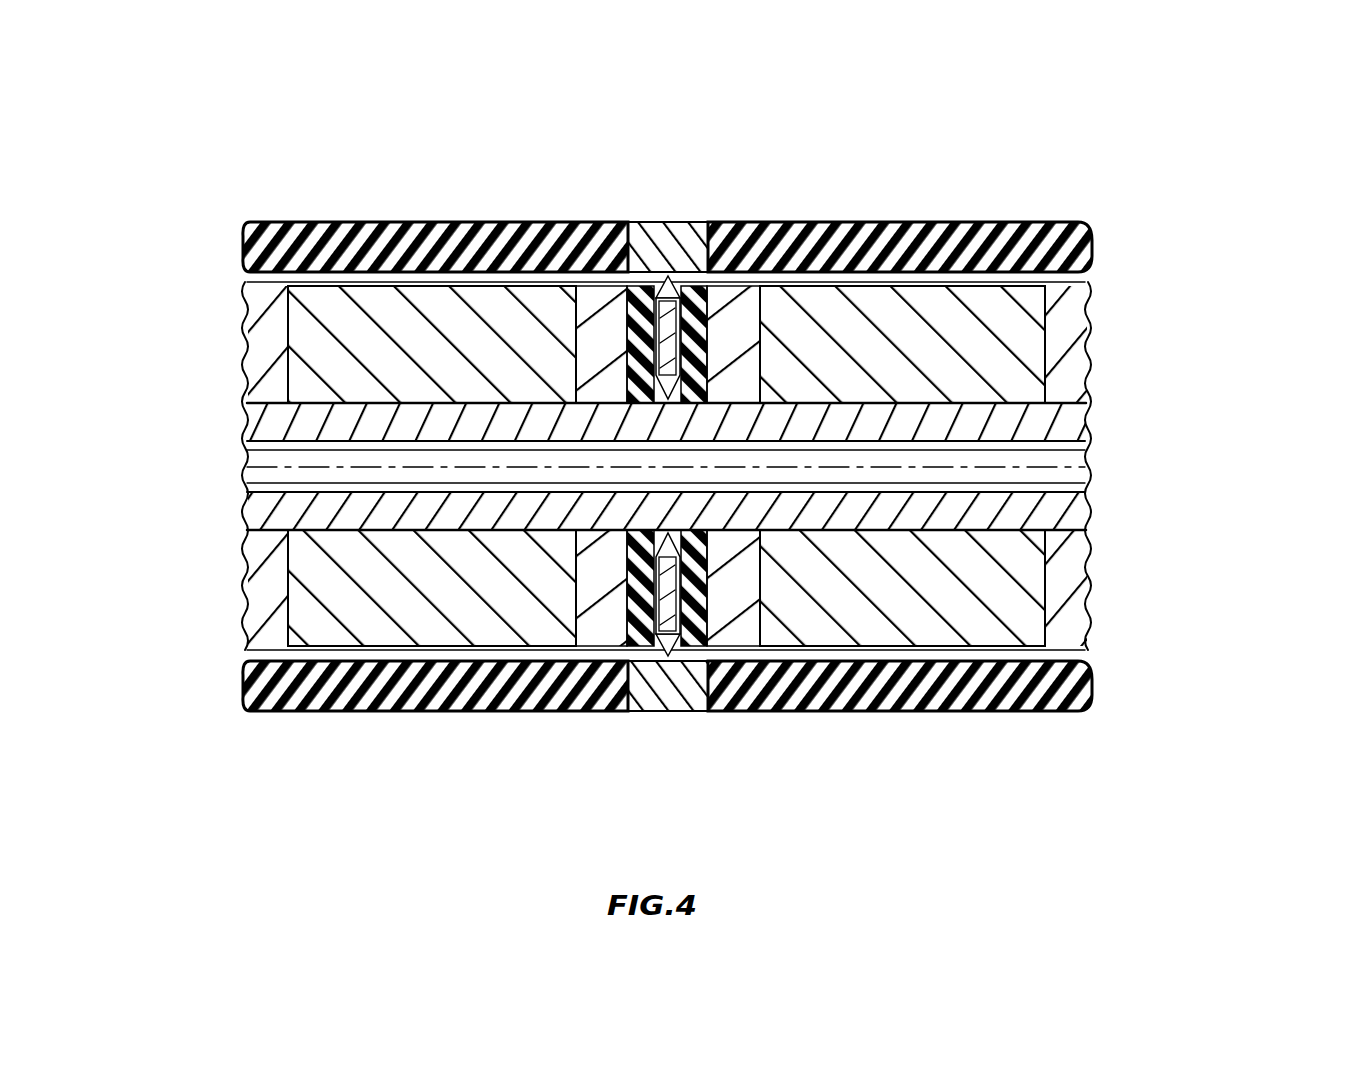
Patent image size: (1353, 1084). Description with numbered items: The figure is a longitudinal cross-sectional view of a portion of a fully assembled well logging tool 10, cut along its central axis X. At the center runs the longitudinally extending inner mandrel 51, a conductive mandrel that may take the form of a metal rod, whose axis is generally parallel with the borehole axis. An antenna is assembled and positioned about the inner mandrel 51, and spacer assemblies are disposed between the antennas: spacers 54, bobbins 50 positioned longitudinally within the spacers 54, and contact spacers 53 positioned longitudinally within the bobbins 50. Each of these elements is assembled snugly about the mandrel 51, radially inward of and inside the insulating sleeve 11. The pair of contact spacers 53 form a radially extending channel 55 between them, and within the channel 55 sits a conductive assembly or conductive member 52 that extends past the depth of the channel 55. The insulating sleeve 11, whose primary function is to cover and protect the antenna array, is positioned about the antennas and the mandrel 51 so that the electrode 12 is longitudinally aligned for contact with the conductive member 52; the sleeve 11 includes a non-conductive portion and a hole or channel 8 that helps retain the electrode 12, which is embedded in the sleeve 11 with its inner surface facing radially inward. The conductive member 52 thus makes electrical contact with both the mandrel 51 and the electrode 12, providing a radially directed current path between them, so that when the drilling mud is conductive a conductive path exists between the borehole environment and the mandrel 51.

The well logging tool 10 is at (1243, 158).
The hole or channel 8 is at (875, 223).
The insulating sleeve 11 is at (1022, 223).
The electrode 12 is at (650, 240).
The bobbin 50 is at (492, 307).
The inner mandrel 51 is at (403, 533).
The conductive member 52 is at (666, 272).
The contact spacer 53 is at (634, 312).
The spacer 54 is at (268, 345).
The channel 55 is at (625, 332).
The axis X is at (1087, 483).